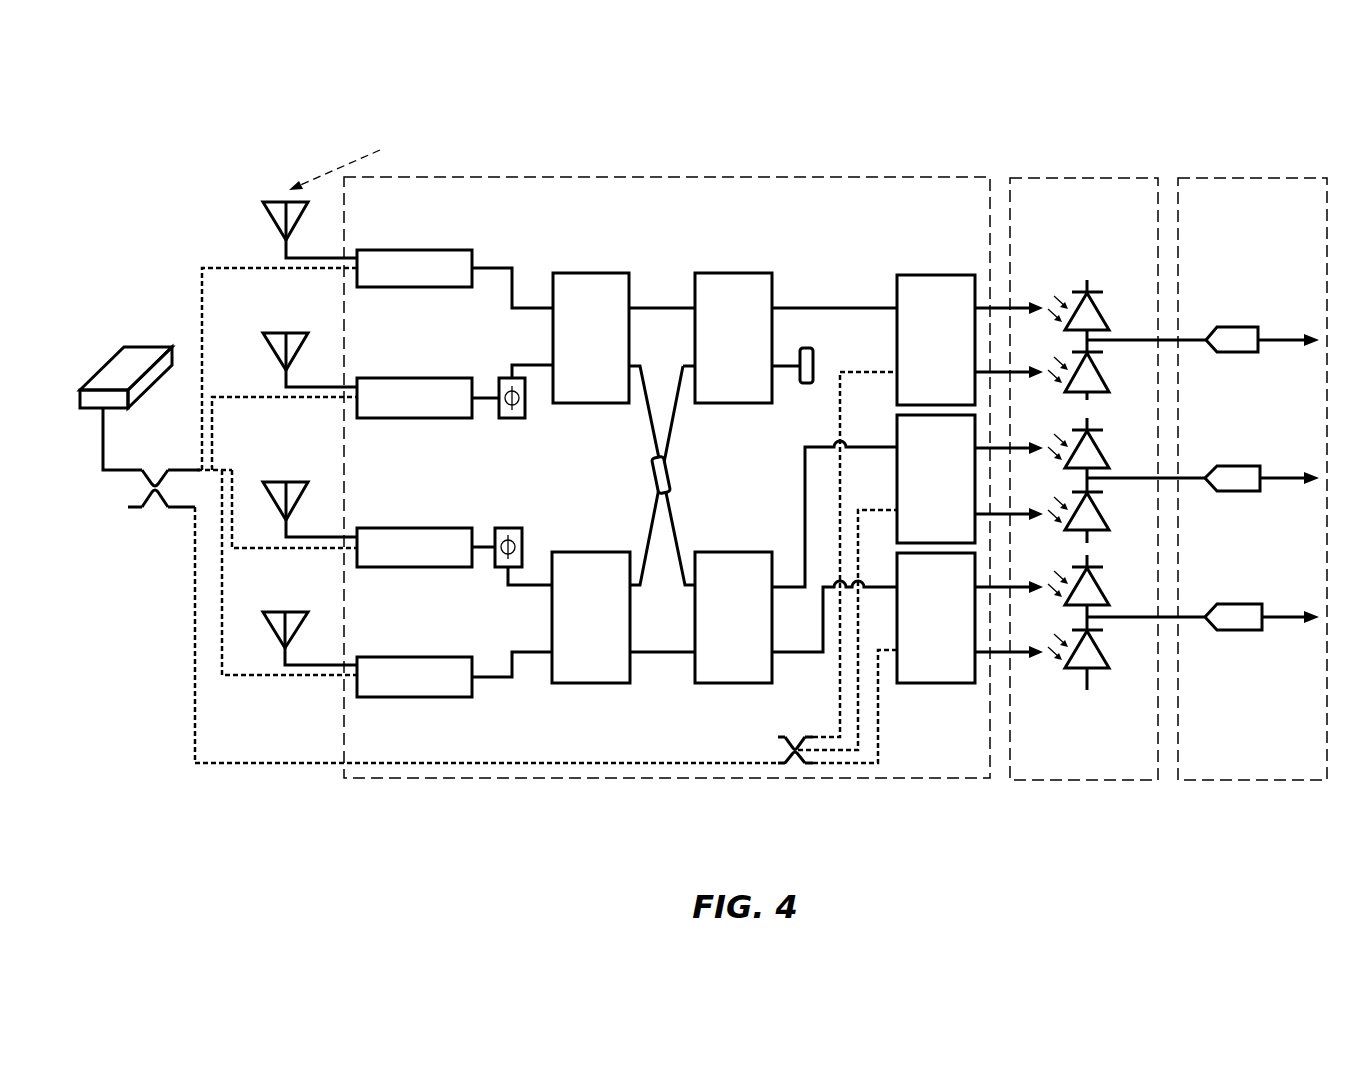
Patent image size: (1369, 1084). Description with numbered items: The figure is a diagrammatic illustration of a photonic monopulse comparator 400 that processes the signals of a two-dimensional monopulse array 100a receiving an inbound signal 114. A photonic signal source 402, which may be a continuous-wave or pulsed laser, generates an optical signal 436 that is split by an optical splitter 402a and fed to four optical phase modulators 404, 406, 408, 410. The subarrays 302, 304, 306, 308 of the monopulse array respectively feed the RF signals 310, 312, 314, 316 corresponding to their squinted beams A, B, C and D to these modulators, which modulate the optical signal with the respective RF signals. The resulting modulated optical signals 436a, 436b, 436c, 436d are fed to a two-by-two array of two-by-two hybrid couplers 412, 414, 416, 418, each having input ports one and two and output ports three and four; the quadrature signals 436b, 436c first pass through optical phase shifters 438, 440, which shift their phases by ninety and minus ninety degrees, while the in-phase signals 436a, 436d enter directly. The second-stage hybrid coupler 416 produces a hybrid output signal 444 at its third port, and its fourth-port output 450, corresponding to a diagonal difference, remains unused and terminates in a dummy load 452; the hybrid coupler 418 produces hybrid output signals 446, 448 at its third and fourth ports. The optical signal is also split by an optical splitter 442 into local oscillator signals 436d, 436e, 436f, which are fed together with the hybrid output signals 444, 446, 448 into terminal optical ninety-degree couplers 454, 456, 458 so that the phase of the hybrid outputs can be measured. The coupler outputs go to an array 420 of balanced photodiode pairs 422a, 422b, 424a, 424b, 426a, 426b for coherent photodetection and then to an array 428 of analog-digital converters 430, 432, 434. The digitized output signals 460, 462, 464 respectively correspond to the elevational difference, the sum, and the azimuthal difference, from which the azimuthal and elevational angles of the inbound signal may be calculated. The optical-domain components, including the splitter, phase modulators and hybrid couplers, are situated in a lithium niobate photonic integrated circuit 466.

The photonic monopulse comparator 400 is at (142, 142).
The 2D monopulse array 100a is at (250, 170).
The inbound signal 114 is at (355, 165).
The subarray 302 is at (270, 218).
The subarray 304 is at (286, 333).
The subarray 306 is at (286, 482).
The subarray 308 is at (286, 612).
The squinted beam A RF signal 310 is at (284, 256).
The squinted beam B RF signal 312 is at (283, 383).
The squinted beam C RF signal 314 is at (283, 532).
The squinted beam D RF signal 316 is at (283, 663).
The photonic signal source 402 is at (148, 358).
The optical splitter 402a is at (142, 508).
The optical signal 436 is at (198, 467).
The modulated optical signal 436a is at (501, 266).
The modulated optical signal 436b is at (536, 364).
The modulated optical signal 436c is at (508, 586).
The modulated optical signal / local oscillator signal 436d is at (480, 678).
The local oscillator signal 436e is at (860, 713).
The local oscillator signal 436f is at (857, 765).
The optical phase modulator 404 is at (395, 281).
The optical phase modulator 406 is at (395, 410).
The optical phase modulator 408 is at (395, 560).
The optical phase modulator 410 is at (395, 690).
The hybrid coupler 412 is at (571, 350).
The hybrid coupler 414 is at (571, 630).
The hybrid coupler 416 is at (713, 345).
The hybrid coupler 418 is at (713, 630).
The optical phase shifter 438 is at (515, 418).
The optical phase shifter 440 is at (510, 527).
The optical splitter 442 is at (800, 767).
The hybrid output signal 444 is at (858, 306).
The hybrid output signal 446 is at (803, 512).
The hybrid output signal 448 is at (785, 655).
The hybrid output 4 450 is at (790, 368).
The dummy load 452 is at (806, 348).
The optical 90-degree coupler 454 is at (916, 352).
The optical 90-degree coupler 456 is at (916, 490).
The optical 90-degree coupler 458 is at (916, 630).
The photonic integrated circuit 466 is at (921, 224).
The array of balanced photodiode pairs 420 is at (1072, 224).
The balanced photodiode 422a is at (1098, 310).
The balanced photodiode 422b is at (1083, 392).
The balanced photodiode 424a is at (1100, 452).
The balanced photodiode 424b is at (1082, 530).
The balanced photodiode 426a is at (1100, 590).
The balanced photodiode 426b is at (1090, 672).
The array of analog-digital converters 428 is at (1248, 224).
The analog-digital converter 430 is at (1237, 327).
The analog-digital converter 432 is at (1240, 466).
The analog-digital converter 434 is at (1240, 604).
The digital output signal 460 is at (1292, 346).
The digital output signal 462 is at (1292, 485).
The digital output signal 464 is at (1292, 625).